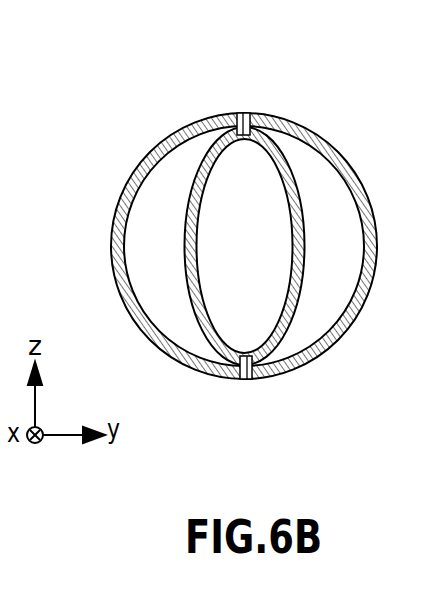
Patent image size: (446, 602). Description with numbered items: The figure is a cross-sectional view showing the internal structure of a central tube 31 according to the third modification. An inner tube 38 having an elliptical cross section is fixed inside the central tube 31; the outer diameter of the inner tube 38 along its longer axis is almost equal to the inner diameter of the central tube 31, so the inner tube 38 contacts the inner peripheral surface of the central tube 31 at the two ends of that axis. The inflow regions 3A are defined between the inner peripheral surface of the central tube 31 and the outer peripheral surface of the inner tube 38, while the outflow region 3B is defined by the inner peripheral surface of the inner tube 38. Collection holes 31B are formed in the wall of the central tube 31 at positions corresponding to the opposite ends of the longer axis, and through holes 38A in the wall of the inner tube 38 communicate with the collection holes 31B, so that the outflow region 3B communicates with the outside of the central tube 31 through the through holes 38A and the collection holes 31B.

The central tube 31 is at (162, 138).
The inner tube 38 is at (212, 119).
The collection hole 31B is at (248, 113).
The through hole 38A is at (243, 113).
The inflow region 3A is at (168, 254).
The outflow region 3B is at (258, 254).